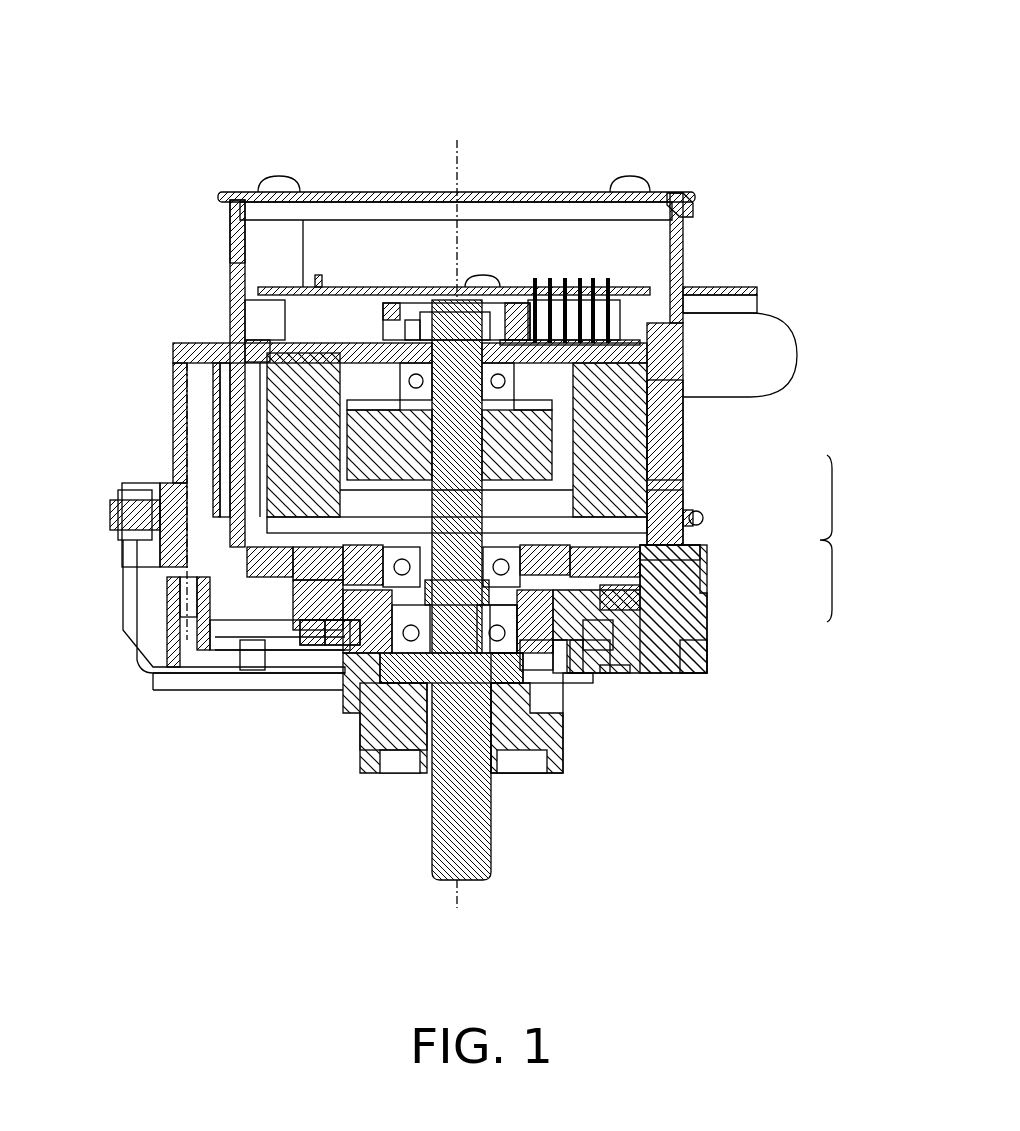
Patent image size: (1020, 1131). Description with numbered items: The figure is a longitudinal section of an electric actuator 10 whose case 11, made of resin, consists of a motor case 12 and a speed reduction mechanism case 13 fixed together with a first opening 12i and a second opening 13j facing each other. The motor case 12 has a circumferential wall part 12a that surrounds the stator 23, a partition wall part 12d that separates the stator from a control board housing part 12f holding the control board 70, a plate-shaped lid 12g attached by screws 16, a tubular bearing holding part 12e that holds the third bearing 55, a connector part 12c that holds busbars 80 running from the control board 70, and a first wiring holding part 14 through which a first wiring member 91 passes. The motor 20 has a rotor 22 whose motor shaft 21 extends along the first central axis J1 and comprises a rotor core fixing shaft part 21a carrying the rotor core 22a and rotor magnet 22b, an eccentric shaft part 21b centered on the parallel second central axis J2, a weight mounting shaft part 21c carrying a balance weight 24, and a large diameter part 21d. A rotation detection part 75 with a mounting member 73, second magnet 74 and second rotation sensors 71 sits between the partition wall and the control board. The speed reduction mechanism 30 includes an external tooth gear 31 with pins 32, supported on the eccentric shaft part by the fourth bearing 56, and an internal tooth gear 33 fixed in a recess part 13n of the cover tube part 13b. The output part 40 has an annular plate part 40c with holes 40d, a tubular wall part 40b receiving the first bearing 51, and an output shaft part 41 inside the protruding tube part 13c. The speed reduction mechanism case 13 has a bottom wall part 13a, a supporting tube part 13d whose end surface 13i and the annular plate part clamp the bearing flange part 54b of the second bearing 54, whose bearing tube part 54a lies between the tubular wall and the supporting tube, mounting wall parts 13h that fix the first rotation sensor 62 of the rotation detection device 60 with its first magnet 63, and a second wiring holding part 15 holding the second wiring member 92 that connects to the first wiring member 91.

The electric actuator 10 is at (730, 122).
The first central axis J1 is at (457, 140).
The second central axis J2 is at (200, 445).
The case 11 is at (844, 538).
The motor case 12 is at (693, 440).
The circumferential wall part 12a is at (690, 430).
The connector part 12c is at (772, 352).
The partition wall part 12d is at (348, 288).
The bearing holding part 12e is at (372, 300).
The control board housing part 12f is at (690, 223).
The lid 12g is at (322, 192).
The first opening 12i is at (683, 510).
The speed reduction mechanism case 13 is at (706, 635).
The bottom wall part 13a is at (625, 690).
The cover tube part 13b is at (710, 650).
The protruding tube part 13c is at (528, 660).
The supporting tube part 13d is at (600, 690).
The mounting wall part 13h is at (370, 745).
The end surface 13i is at (600, 663).
The second opening 13j is at (705, 518).
The recess part 13n is at (700, 550).
The first wiring holding part 14 is at (175, 385).
The second wiring holding part 15 is at (153, 690).
The screws 16 is at (285, 180).
The motor 20 is at (675, 403).
The motor shaft 21 is at (580, 330).
The rotor core fixing shaft part 21a is at (185, 356).
The eccentric shaft part 21b is at (185, 490).
The weight mounting shaft part 21c is at (213, 465).
The large diameter part 21d is at (215, 415).
The rotor 22 is at (237, 305).
The rotor core 22a is at (233, 263).
The rotor magnet 22b is at (285, 332).
The stator 23 is at (240, 345).
The balance weight 24 is at (692, 287).
The speed reduction mechanism 30 is at (282, 595).
The external tooth gear 31 is at (684, 500).
The pins 32 is at (300, 640).
The internal tooth gear 33 is at (705, 598).
The output part 40 is at (520, 720).
The tubular wall part 40b is at (540, 700).
The annular plate part 40c is at (704, 662).
The holes 40d is at (250, 660).
The output shaft part 41 is at (465, 882).
The first bearing 51 is at (512, 690).
The second bearing 54 is at (560, 700).
The bearing tube part 54a is at (578, 660).
The bearing flange part 54b is at (590, 650).
The third bearing 55 is at (412, 305).
The fourth bearing 56 is at (112, 515).
The rotation detection device 60 is at (352, 780).
The first rotation sensor 62 is at (338, 625).
The first magnet 63 is at (322, 625).
The control board 70 is at (572, 300).
The second rotation sensors 71 is at (508, 325).
The mounting member 73 is at (428, 310).
The second magnet 74 is at (545, 330).
The rotation detection part 75 is at (490, 320).
The busbars 80 is at (633, 185).
The first wiring member 91 is at (160, 577).
The second wiring member 92 is at (165, 605).